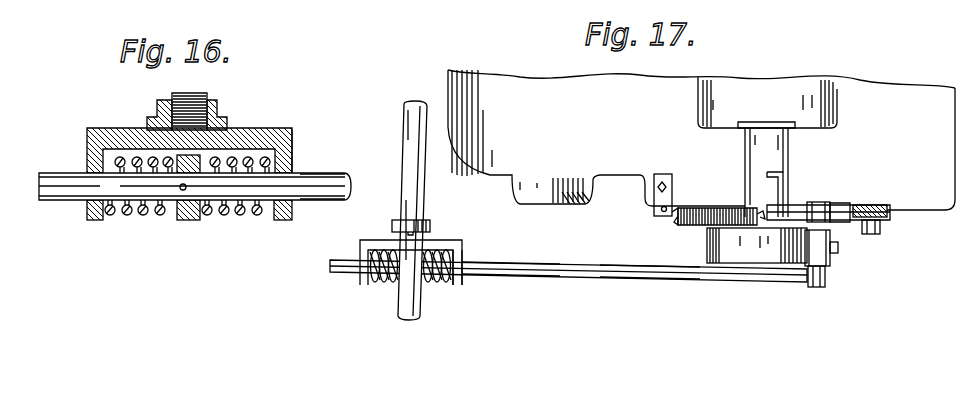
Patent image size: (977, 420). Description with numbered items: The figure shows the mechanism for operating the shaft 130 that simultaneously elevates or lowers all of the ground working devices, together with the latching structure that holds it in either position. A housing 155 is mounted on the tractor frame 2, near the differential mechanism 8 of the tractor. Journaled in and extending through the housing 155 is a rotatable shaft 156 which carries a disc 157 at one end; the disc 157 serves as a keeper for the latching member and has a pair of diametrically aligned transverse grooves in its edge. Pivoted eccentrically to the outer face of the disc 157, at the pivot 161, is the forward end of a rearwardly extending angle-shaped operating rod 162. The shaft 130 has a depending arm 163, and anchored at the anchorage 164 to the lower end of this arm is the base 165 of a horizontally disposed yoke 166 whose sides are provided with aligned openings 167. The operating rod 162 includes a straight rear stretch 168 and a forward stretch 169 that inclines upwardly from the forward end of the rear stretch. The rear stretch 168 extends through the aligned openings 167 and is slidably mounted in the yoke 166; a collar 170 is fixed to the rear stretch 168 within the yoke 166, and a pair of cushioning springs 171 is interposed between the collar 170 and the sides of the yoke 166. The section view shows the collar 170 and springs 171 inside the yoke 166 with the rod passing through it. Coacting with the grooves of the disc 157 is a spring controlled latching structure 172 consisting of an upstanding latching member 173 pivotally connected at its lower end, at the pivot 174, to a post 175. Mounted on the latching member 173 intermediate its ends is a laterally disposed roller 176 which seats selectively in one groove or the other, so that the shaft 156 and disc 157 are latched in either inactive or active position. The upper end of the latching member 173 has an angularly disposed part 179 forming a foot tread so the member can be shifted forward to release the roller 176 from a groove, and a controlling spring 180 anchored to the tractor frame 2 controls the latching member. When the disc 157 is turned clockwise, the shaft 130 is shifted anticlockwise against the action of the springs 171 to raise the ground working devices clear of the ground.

In FIG. 17, the tractor frame 2 is at (887, 100).
In FIG. 17, the differential mechanism 8 is at (512, 92).
In FIG. 17, the shaft 130 is at (411, 103).
In FIG. 17, the housing 155 is at (816, 71).
In FIG. 17, the rotatable shaft 156 is at (760, 267).
In FIG. 17, the disc 157 is at (743, 257).
In FIG. 17, the pivot 161 is at (813, 287).
In FIG. 16, the operating rod 162 is at (70, 156).
In FIG. 17, the operating rod 162 is at (603, 278).
In FIG. 16, the depending arm 163 is at (227, 127).
In FIG. 17, the depending arm 163 is at (428, 223).
In FIG. 16, the anchorage 164 is at (208, 107).
In FIG. 16, the base 165 is at (270, 137).
In FIG. 17, the base 165 is at (442, 242).
In FIG. 16, the yoke 166 is at (294, 149).
In FIG. 17, the yoke 166 is at (464, 249).
In FIG. 16, the aligned openings 167 is at (88, 204).
In FIG. 16, the straight rear stretch 168 is at (349, 165).
In FIG. 17, the straight rear stretch 168 is at (482, 277).
In FIG. 17, the forward stretch 169 is at (671, 266).
In FIG. 16, the collar 170 is at (183, 222).
In FIG. 16, the cushioning springs 171 is at (142, 215).
In FIG. 17, the cushioning springs 171 is at (383, 280).
In FIG. 17, the latching structure 172 is at (795, 211).
In FIG. 17, the latching member 173 is at (838, 216).
In FIG. 17, the pivot 174 is at (870, 228).
In FIG. 17, the post 175 is at (884, 213).
In FIG. 17, the roller 176 is at (830, 260).
In FIG. 17, the angularly disposed part 179 is at (778, 174).
In FIG. 17, the controlling spring 180 is at (731, 191).